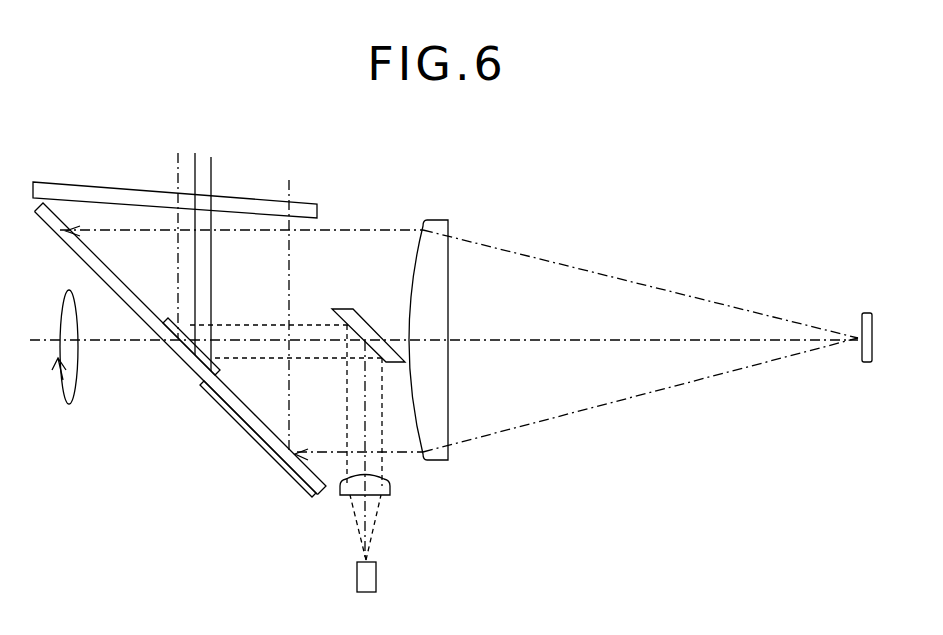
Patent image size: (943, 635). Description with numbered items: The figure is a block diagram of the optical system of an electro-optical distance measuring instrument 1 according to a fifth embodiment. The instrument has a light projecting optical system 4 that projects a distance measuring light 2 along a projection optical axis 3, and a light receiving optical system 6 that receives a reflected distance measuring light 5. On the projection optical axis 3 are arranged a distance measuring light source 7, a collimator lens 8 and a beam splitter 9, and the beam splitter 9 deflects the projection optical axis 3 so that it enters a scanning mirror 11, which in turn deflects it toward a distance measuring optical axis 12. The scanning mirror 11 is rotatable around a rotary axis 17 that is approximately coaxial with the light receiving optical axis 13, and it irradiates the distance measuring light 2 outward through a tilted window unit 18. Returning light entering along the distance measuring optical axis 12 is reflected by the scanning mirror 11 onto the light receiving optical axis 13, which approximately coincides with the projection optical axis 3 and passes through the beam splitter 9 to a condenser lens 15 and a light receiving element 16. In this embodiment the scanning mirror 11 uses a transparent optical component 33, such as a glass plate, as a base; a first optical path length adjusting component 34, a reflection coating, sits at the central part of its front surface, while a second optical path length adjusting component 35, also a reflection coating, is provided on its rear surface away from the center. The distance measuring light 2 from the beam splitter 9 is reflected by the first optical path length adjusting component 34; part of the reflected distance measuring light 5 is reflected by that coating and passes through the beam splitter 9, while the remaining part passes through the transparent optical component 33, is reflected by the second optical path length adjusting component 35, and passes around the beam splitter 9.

The electro-optical distance measuring instrument 1 is at (552, 139).
The distance measuring light 2 is at (213, 170).
The projection optical axis 3 is at (365, 408).
The light projecting optical system 4 is at (338, 524).
The reflected distance measuring light 5 is at (630, 281).
The light receiving optical system 6 is at (490, 474).
The distance measuring light source 7 is at (378, 574).
The collimator lens 8 is at (340, 497).
The beam splitter 9 is at (357, 308).
The scanning mirror 11 is at (205, 402).
The distance measuring optical axis 12 is at (192, 176).
The light receiving optical axis 13 is at (545, 338).
The condenser lens 15 is at (437, 217).
The light receiving element 16 is at (867, 312).
The rotary axis 17 is at (32, 343).
The window unit 18 is at (247, 197).
The transparent optical component 33 is at (182, 363).
The first optical path length adjusting component 34 is at (197, 333).
The second optical path length adjusting component 35 is at (252, 440).